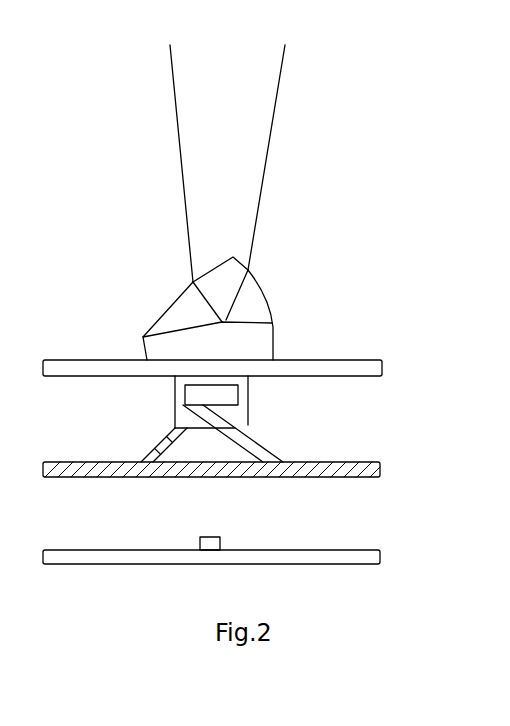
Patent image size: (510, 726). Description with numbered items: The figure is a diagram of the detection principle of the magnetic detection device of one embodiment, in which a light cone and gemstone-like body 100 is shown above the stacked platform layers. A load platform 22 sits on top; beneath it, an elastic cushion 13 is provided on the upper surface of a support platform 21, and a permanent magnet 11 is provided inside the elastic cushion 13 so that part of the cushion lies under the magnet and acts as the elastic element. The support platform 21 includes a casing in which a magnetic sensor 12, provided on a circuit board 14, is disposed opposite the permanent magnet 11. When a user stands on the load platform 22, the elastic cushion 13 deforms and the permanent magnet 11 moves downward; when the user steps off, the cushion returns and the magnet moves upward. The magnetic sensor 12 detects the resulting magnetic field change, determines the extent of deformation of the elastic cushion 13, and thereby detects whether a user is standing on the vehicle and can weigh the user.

The light beam / gemstone 100 is at (265, 160).
The load platform 22 is at (349, 360).
The permanent magnet 11 is at (175, 405).
The elastic cushion 13 is at (271, 443).
The support platform 21 is at (345, 462).
The magnetic sensor 12 is at (221, 537).
The circuit board 14 is at (340, 550).